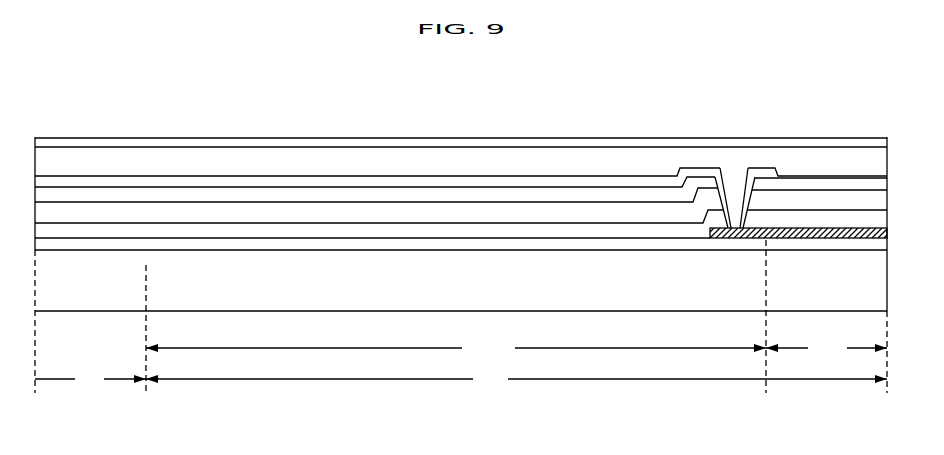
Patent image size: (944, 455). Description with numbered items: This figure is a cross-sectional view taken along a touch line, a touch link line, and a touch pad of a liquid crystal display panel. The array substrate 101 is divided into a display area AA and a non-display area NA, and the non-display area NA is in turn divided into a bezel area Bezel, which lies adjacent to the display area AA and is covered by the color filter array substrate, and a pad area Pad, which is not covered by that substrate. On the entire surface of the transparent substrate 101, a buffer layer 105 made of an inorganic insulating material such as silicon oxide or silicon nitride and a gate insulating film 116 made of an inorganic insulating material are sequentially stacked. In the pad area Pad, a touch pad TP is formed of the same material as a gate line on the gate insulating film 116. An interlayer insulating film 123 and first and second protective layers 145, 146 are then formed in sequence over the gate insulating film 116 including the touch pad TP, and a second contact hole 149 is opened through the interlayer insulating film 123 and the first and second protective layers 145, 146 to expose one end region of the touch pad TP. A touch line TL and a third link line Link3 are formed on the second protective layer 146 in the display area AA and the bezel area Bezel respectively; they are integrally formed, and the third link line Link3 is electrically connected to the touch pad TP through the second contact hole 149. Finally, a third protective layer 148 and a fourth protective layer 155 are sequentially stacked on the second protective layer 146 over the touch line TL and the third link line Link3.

The array substrate 101 is at (876, 300).
The buffer layer 105 is at (545, 245).
The gate insulating film 116 is at (595, 230).
The interlayer insulating film 123 is at (363, 230).
The first protective layer 145 is at (545, 213).
The second protective layer 146 is at (593, 195).
The third protective layer 148 is at (646, 160).
The second contact hole 149 is at (736, 186).
The fourth protective layer 155 is at (385, 142).
The touch line TL is at (63, 182).
The third link line Link3 is at (285, 183).
The touch pad TP is at (823, 232).
The display area AA is at (90, 379).
The non-display area NA is at (516, 379).
The bezel area Bezel is at (456, 348).
The pad area Pad is at (826, 348).